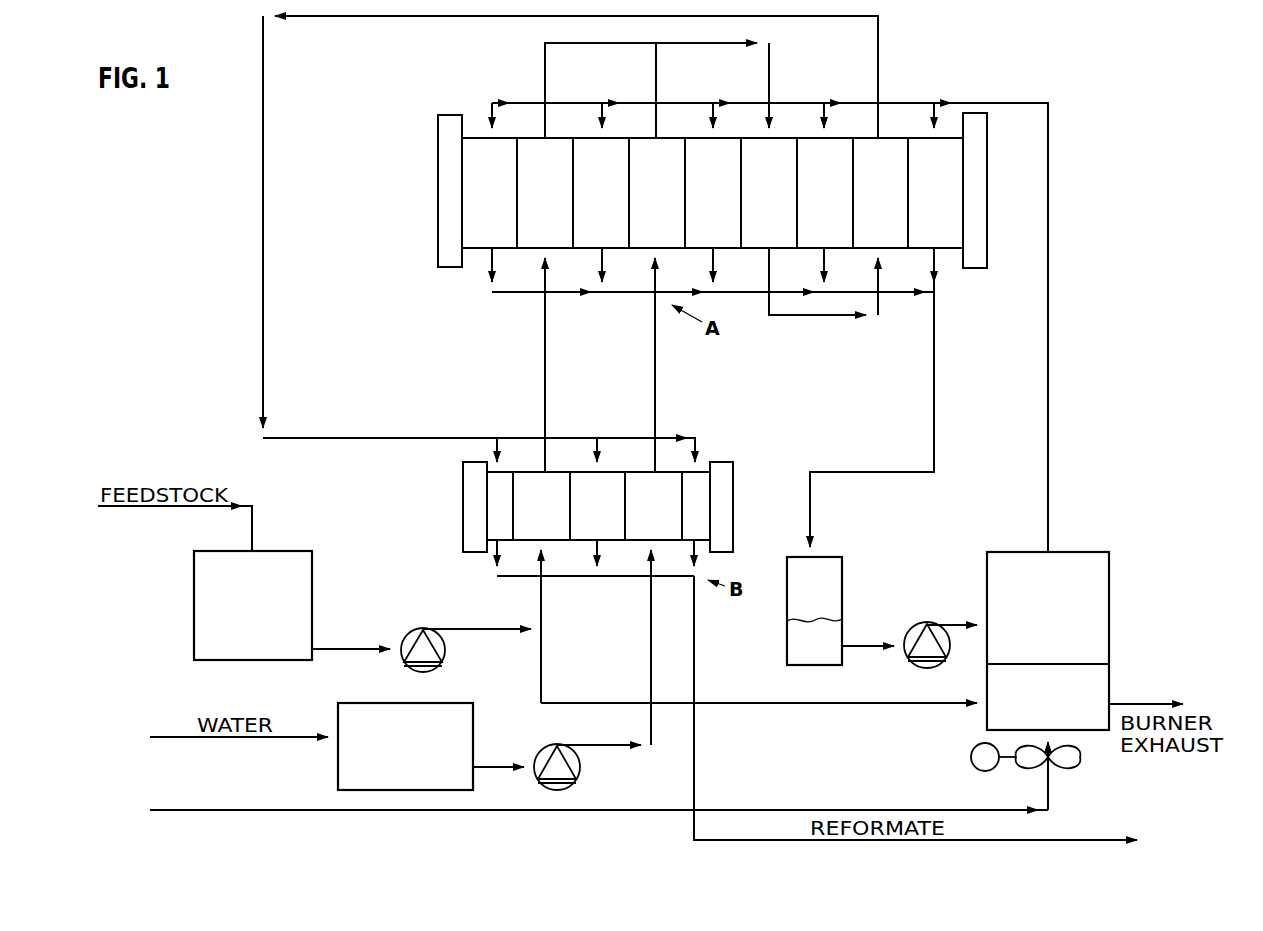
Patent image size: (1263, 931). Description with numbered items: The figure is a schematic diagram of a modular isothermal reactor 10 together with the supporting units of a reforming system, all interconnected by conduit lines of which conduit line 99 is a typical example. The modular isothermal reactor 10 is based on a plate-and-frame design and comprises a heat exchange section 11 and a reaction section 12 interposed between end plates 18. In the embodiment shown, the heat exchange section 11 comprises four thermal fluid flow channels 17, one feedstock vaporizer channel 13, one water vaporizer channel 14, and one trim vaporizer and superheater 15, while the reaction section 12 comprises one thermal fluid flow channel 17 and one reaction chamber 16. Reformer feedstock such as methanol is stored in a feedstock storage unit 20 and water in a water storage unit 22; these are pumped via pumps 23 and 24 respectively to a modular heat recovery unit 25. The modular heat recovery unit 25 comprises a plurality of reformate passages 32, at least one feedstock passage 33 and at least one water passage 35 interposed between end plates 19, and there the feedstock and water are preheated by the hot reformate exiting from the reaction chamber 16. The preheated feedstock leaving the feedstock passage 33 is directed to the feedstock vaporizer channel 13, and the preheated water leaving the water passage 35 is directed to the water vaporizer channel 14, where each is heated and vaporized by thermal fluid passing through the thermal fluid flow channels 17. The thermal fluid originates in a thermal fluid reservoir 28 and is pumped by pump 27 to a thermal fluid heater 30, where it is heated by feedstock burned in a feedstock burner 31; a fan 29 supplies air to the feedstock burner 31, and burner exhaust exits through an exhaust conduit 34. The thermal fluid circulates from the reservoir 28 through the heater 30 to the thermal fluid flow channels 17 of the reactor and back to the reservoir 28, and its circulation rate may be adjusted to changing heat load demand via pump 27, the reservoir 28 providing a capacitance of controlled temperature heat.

The modular isothermal reactor 10 is at (667, 180).
The heat exchange section 11 is at (673, 152).
The reaction section 12 is at (884, 150).
The feedstock vaporizer channel 13 is at (553, 153).
The water vaporizer channel 14 is at (661, 153).
The trim vaporizer and superheater 15 is at (782, 153).
The reaction chamber 16 is at (901, 155).
The thermal fluid flow channels 17 is at (481, 152).
The end plates 18 is at (438, 128).
The end plates 19 is at (465, 462).
The feedstock storage unit 20 is at (300, 601).
The water storage unit 22 is at (463, 742).
The pump 23 is at (440, 664).
The pump 24 is at (579, 773).
The modular heat recovery unit 25 is at (565, 493).
The pump 27 is at (928, 668).
The thermal fluid reservoir 28 is at (825, 582).
The fan 29 is at (1080, 760).
The thermal fluid heater 30 is at (1078, 641).
The feedstock burner 31 is at (1097, 680).
The reformate passages 32 is at (507, 481).
The feedstock passage 33 is at (548, 483).
The exhaust conduit 34 is at (1135, 704).
The water passage 35 is at (660, 488).
The conduit line 99 is at (1048, 332).